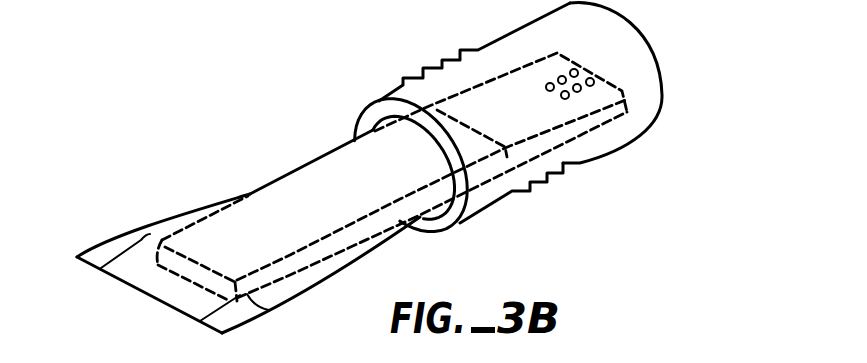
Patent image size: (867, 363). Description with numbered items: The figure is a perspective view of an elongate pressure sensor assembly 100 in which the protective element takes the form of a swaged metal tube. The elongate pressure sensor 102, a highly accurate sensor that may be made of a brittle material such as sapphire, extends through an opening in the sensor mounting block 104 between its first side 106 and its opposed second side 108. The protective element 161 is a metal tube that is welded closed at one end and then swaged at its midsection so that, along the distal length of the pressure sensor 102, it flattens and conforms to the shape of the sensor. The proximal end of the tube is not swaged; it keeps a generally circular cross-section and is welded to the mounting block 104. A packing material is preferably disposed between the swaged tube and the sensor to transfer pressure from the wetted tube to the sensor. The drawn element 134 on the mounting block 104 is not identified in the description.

The surgical instrument 100 is at (212, 74).
The shaft 102 is at (338, 171).
The housing 104 is at (430, 68).
The collar 106 is at (434, 231).
The housing end cap 108 is at (664, 110).
The holes 134 is at (604, 92).
The blade tip 161 is at (192, 213).